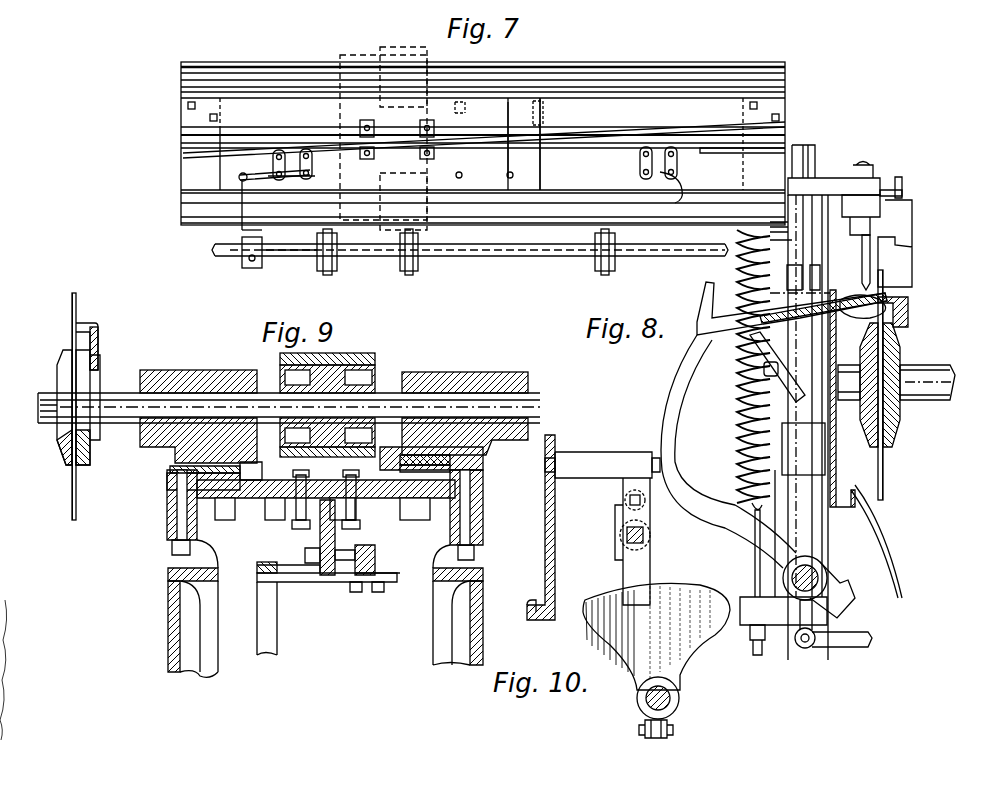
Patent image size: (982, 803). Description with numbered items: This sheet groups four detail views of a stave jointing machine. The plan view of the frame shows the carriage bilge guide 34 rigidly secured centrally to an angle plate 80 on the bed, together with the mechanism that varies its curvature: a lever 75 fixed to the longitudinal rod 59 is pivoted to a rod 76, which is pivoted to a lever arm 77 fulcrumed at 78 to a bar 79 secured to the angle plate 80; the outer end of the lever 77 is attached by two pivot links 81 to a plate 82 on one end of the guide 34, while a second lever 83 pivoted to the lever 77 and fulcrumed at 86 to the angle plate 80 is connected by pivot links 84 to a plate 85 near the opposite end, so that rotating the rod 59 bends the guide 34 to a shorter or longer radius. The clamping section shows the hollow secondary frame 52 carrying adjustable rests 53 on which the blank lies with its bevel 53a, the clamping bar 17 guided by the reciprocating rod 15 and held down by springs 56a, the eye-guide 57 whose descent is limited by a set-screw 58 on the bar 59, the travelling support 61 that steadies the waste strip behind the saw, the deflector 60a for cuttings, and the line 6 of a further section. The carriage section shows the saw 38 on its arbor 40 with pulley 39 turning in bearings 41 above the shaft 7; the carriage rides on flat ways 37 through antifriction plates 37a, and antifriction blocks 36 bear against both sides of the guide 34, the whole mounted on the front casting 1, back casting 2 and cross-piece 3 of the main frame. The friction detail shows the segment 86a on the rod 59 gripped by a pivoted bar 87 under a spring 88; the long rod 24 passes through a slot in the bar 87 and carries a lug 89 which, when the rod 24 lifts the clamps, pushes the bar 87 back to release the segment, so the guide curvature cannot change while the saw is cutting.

In FIG. 7, the flat ways 37 is at (483, 143).
In FIG. 9, the flat ways 37 is at (167, 480).
In FIG. 7, the angle plate 80 is at (598, 129).
In FIG. 7, the plate 85 is at (183, 155).
In FIG. 7, the lever arm 77 is at (240, 176).
In FIG. 7, the pivot links 84 is at (300, 180).
In FIG. 7, the second lever 83 is at (406, 188).
In FIG. 7, the fulcrum 86 is at (460, 180).
In FIG. 7, the fulcrum 78 is at (512, 180).
In FIG. 8, the fulcrum 78 is at (863, 258).
In FIG. 7, the bar 79 is at (508, 154).
In FIG. 7, the carriage bilge guide 34 is at (596, 150).
In FIG. 9, the carriage bilge guide 34 is at (320, 535).
In FIG. 7, the pivot links 81 is at (655, 183).
In FIG. 7, the plate 82 is at (731, 158).
In FIG. 7, the lever 75 is at (240, 245).
In FIG. 7, the rod 76 is at (470, 252).
In FIG. 9, the saw 38 is at (72, 312).
In FIG. 8, the saw 38 is at (883, 463).
In FIG. 9, the saw arbor 40 is at (540, 407).
In FIG. 8, the saw arbor 40 is at (942, 372).
In FIG. 9, the bearings 41 is at (196, 375).
In FIG. 9, the pulley 39 is at (370, 375).
In FIG. 9, the antifriction plates 37a is at (200, 466).
In FIG. 9, the shaft 7 is at (170, 471).
In FIG. 9, the antifriction blocks 36 is at (292, 525).
In FIG. 9, the cross-piece 3 is at (336, 580).
In FIG. 9, the front casting 1 is at (208, 626).
In FIG. 9, the back casting 2 is at (486, 609).
In FIG. 10, the bar 87 is at (648, 562).
In FIG. 10, the spring 88 is at (647, 500).
In FIG. 10, the lug 89 is at (618, 538).
In FIG. 10, the longitudinal rod 24 is at (645, 536).
In FIG. 10, the segment 86a is at (656, 660).
In FIG. 8, the longitudinal bar 17 is at (875, 185).
In FIG. 8, the longitudinal rod / bar 59 is at (902, 177).
In FIG. 8, the set-screw 58 is at (902, 192).
In FIG. 8, the eye-guide 57 is at (905, 268).
In FIG. 8, the section line 6 is at (890, 296).
In FIG. 8, the bevel 53a is at (887, 300).
In FIG. 8, the rest or support 61 is at (908, 320).
In FIG. 8, the arms or rests 53 is at (804, 330).
In FIG. 8, the springs 56a is at (745, 405).
In FIG. 8, the secondary frame 52 is at (836, 438).
In FIG. 8, the reciprocating rod 15 is at (798, 488).
In FIG. 8, the deflector 60a is at (880, 552).